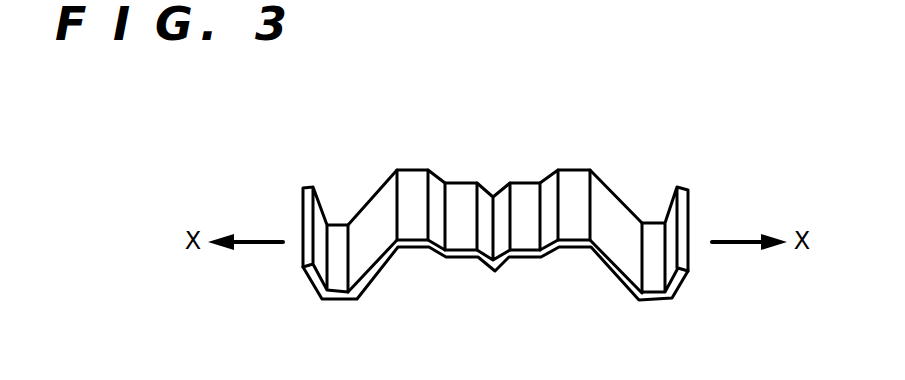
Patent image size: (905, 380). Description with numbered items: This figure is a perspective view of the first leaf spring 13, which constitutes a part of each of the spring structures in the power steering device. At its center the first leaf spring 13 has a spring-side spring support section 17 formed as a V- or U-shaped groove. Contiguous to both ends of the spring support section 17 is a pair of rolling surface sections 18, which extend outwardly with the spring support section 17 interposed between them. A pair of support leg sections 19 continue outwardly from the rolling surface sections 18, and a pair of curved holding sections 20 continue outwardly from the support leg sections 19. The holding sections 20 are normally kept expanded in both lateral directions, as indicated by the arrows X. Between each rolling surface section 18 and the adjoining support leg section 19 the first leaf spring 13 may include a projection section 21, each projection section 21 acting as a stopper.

The first leaf spring 13 is at (415, 118).
The spring-side spring support section 17 is at (506, 260).
The rolling surface sections 18 is at (461, 193).
The support leg sections 19 is at (368, 218).
The curved holding sections 20 is at (312, 293).
The projection sections 21 is at (570, 188).